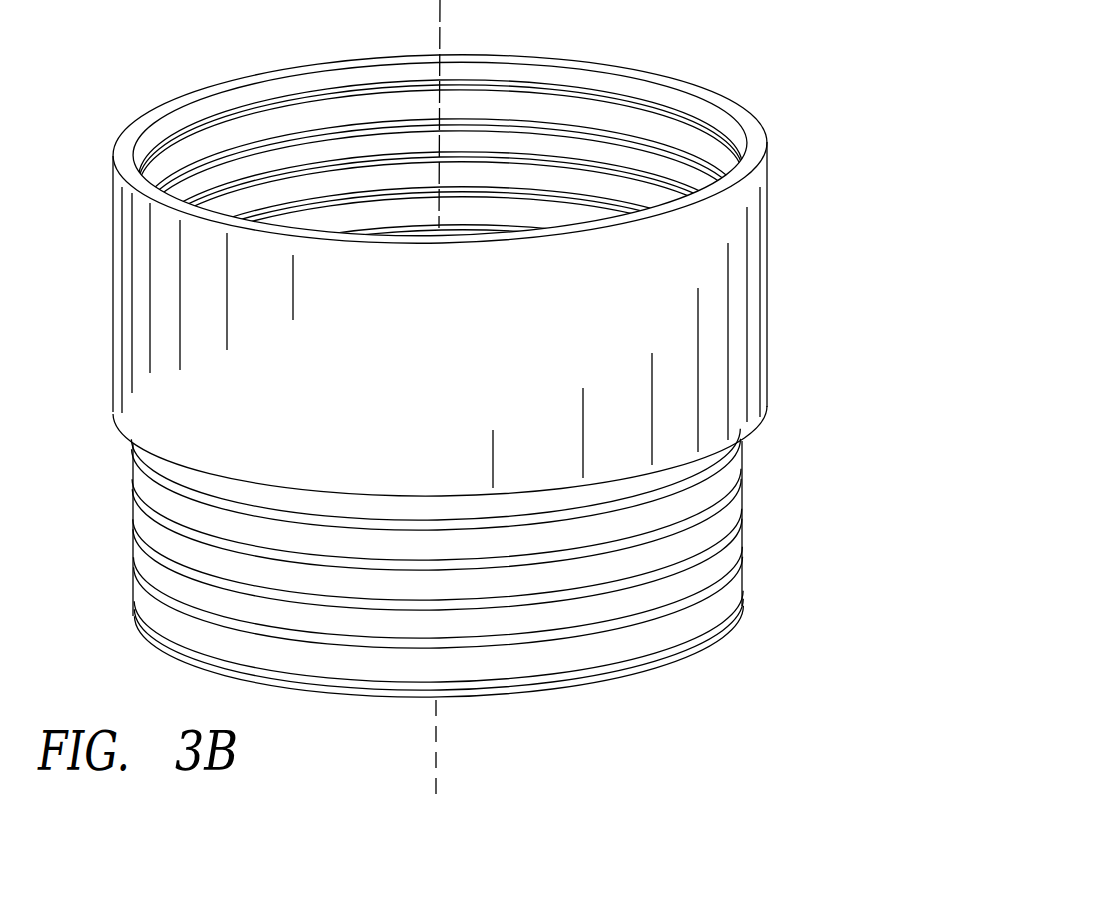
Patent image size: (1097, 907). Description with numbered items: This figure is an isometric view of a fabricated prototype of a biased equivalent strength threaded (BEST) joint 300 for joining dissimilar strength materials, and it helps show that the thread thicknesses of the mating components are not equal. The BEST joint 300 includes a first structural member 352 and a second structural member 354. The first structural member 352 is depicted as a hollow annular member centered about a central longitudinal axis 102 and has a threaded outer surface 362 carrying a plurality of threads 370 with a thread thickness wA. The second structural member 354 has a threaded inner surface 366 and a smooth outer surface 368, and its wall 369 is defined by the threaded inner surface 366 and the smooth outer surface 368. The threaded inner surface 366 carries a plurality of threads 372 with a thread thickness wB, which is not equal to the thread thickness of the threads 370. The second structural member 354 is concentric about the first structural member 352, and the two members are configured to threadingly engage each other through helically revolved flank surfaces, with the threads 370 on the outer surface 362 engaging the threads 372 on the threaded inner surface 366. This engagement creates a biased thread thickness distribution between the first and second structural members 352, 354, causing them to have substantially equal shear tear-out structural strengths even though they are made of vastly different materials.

The central longitudinal axis 102 is at (437, 32).
The biased equivalent strength threaded (BEST) joint 300 is at (683, 58).
The first structural member 352 is at (527, 564).
The second structural member 354 is at (529, 250).
The threaded outer surface 362 is at (521, 564).
The threaded inner surface 366 is at (273, 118).
The smooth outer surface 368 is at (765, 335).
The wall 369 is at (120, 134).
The threads 370 is at (357, 582).
The threads 372 is at (530, 117).